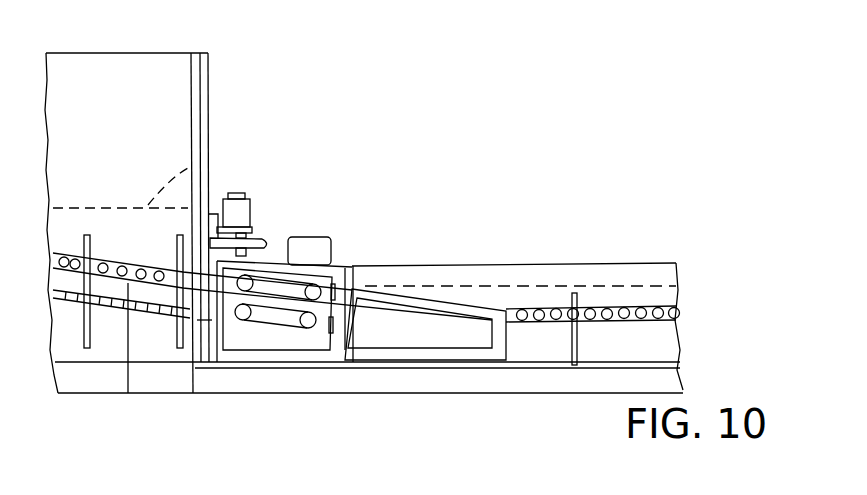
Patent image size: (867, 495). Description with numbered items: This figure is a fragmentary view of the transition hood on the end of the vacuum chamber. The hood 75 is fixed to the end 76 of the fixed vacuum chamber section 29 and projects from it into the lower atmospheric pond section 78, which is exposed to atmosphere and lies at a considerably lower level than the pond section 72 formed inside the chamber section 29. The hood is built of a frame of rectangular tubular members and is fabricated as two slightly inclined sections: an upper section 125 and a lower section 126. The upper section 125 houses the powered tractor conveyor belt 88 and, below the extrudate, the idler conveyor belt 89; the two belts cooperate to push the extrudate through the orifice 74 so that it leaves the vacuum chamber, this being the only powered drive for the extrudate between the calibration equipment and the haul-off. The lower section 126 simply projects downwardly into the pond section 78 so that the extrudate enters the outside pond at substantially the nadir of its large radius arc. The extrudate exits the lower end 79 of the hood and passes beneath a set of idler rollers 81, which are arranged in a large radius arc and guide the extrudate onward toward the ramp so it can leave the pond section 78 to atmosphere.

The vacuum chamber section 29 is at (162, 50).
The end of the vacuum chamber section 76 is at (209, 98).
The pond section 72 is at (213, 158).
The upper section of the hood 125 is at (328, 219).
The powered conveyor belt 88 is at (278, 275).
The idler conveyor belt 89 is at (277, 325).
The hood 75 is at (352, 249).
The orifice 74 is at (359, 290).
The lower section of the hood 126 is at (492, 283).
The lower end of the hood 79 is at (511, 311).
The idler rollers 81 is at (664, 308).
The atmospheric pond section 78 is at (637, 282).